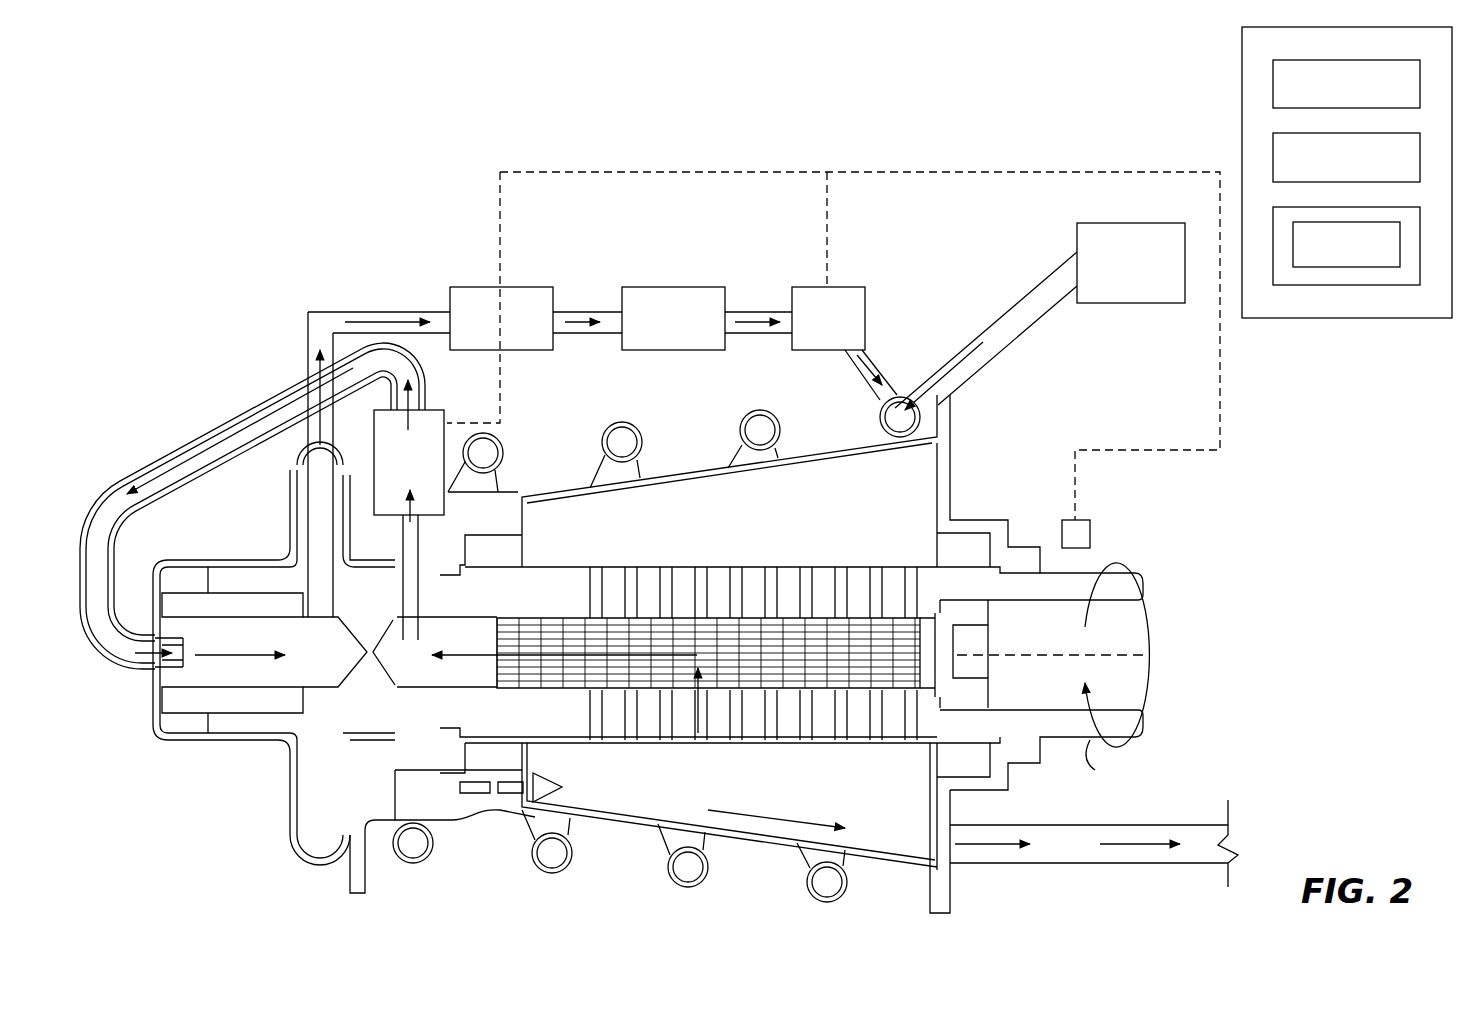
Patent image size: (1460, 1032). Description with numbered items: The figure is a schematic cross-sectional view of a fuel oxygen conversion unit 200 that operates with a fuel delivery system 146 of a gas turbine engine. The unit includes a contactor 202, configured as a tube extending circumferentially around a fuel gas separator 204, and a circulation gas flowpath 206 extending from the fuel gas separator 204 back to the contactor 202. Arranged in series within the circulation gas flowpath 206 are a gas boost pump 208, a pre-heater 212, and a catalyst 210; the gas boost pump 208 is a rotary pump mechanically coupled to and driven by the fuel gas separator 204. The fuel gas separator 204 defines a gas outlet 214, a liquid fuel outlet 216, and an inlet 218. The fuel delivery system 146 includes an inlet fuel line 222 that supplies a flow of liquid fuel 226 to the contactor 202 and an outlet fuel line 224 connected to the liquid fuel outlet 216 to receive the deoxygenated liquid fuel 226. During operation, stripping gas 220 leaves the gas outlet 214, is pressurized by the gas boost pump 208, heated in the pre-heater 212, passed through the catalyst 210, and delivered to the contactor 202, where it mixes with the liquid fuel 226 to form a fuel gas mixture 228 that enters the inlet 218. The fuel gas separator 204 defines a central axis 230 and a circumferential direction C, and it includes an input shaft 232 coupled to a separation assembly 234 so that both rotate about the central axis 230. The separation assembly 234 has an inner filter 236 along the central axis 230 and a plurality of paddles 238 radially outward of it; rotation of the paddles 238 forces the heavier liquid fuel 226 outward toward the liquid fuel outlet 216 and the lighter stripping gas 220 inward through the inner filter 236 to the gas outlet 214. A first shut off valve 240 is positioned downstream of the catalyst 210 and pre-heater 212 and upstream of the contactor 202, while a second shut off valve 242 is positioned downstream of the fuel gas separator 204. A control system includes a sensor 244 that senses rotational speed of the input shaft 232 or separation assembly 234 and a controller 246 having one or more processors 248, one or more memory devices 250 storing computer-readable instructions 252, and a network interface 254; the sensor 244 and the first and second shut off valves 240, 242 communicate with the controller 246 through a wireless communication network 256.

The fuel oxygen conversion unit 200 is at (250, 115).
The contactor 202 is at (765, 432).
The fuel gas separator 204 is at (850, 882).
The circulation gas flowpath 206 is at (350, 308).
The gas boost pump 208 is at (240, 768).
The catalyst 210 is at (672, 287).
The pre-heater 212 is at (468, 287).
The gas outlet 214 is at (425, 555).
The liquid fuel outlet 216 is at (958, 848).
The inlet 218 is at (415, 842).
The stripping gas 220 is at (218, 425).
The inlet fuel line 222 is at (1030, 325).
The outlet fuel line 224 is at (1195, 825).
The liquid fuel 226 is at (962, 368).
The fuel gas mixture 228 is at (512, 795).
The central axis 230 is at (1128, 642).
The input shaft 232 is at (1075, 740).
The separation assembly 234 is at (652, 795).
The inner filter 236 is at (803, 588).
The plurality of paddles 238 is at (765, 510).
The first shut off valve 240 is at (845, 287).
The second shut off valve 242 is at (447, 420).
The sensor 244 is at (1092, 532).
The controller 246 is at (1242, 78).
The processor 248 is at (1346, 157).
The memory device 250 is at (1372, 287).
The computer-readable instructions 252 is at (1310, 268).
The network interface 254 is at (1273, 85).
The wireless communication network 256 is at (985, 172).
The fuel delivery system 146 is at (1060, 228).
The circumferential direction C is at (1150, 690).